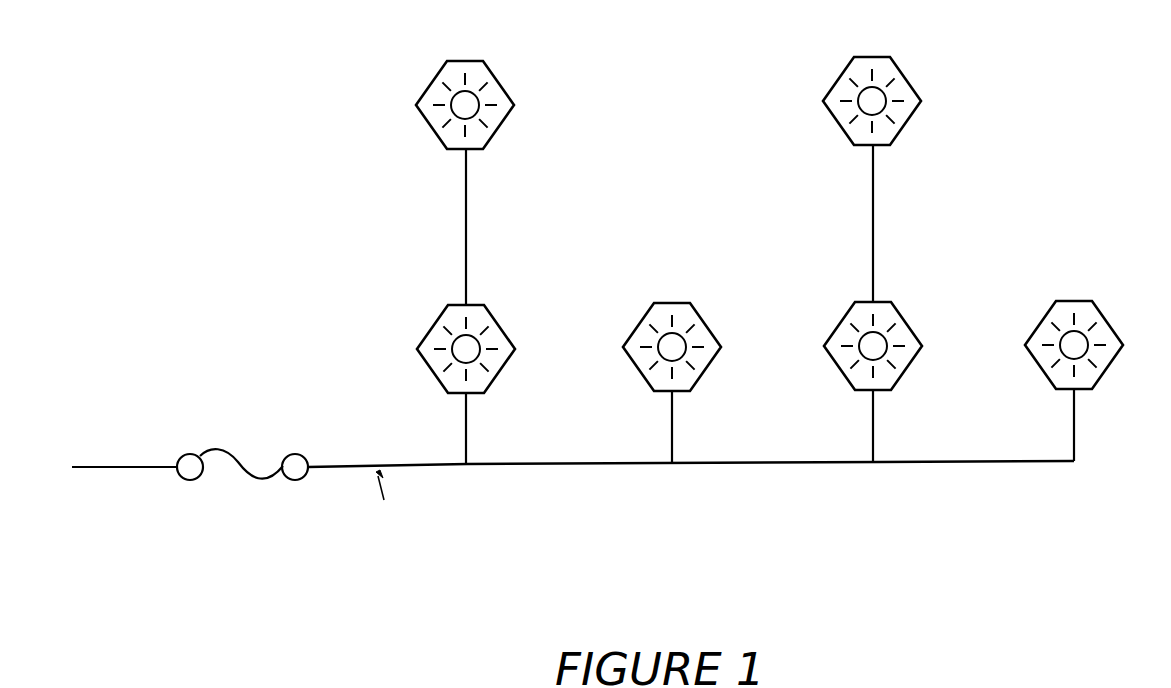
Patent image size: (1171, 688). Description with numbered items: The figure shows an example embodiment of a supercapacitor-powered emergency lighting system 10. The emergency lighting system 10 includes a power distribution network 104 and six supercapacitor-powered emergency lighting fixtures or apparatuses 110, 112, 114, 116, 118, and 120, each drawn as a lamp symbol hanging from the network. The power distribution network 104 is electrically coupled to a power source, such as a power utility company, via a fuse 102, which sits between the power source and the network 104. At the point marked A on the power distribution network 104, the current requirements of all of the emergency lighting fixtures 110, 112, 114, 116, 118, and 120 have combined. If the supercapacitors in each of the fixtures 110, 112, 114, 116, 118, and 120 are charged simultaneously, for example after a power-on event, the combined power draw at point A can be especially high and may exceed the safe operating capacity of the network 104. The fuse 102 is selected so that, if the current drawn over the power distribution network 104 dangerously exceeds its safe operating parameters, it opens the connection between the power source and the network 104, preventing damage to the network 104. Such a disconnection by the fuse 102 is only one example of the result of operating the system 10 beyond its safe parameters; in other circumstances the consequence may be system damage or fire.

The supercapacitor-powered emergency lighting system 10 is at (999, 607).
The fuse 102 is at (246, 462).
The power distribution network 104 is at (351, 462).
The supercapacitor-powered emergency lighting fixture 110 is at (497, 75).
The supercapacitor-powered emergency lighting fixture 112 is at (500, 320).
The supercapacitor-powered emergency lighting fixture 114 is at (704, 320).
The supercapacitor-powered emergency lighting fixture 116 is at (902, 72).
The supercapacitor-powered emergency lighting fixture 118 is at (906, 320).
The supercapacitor-powered emergency lighting fixture 120 is at (1106, 318).